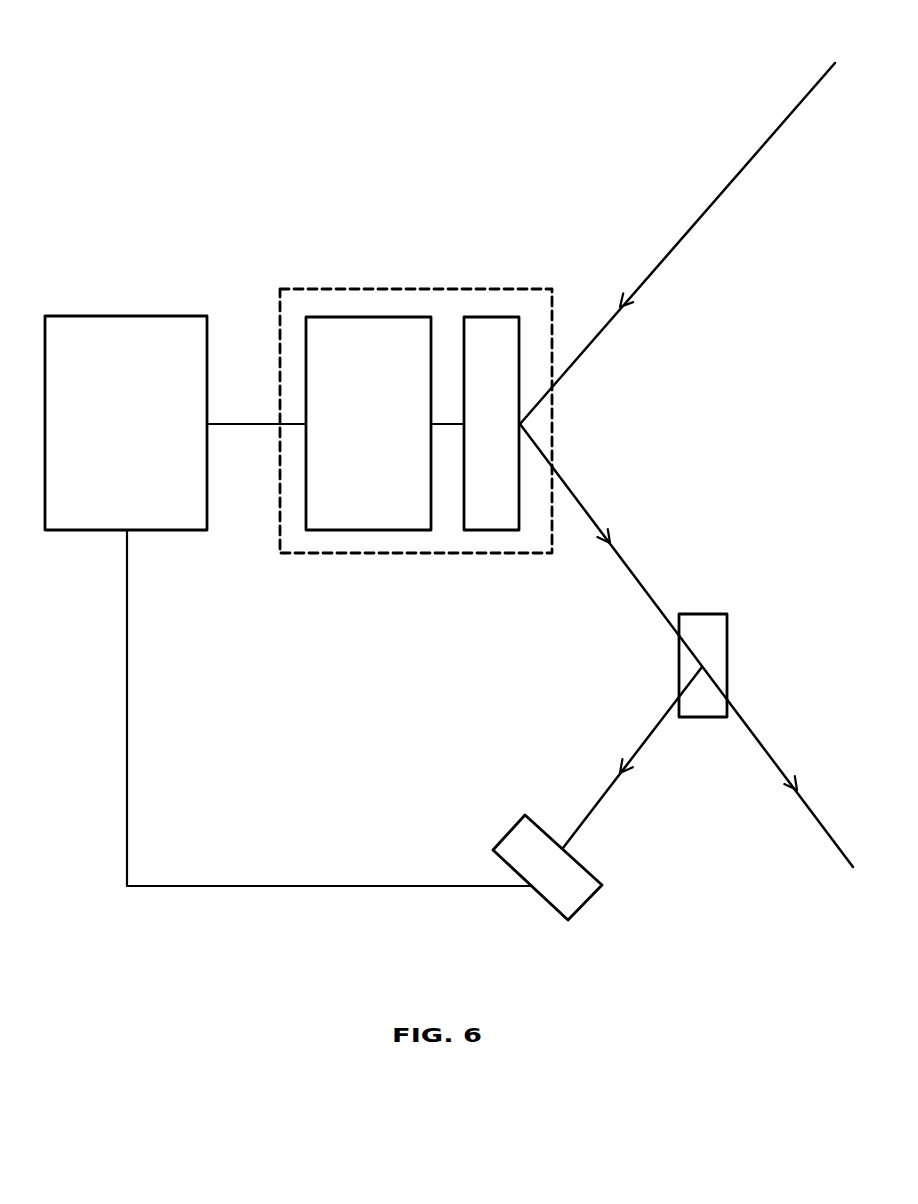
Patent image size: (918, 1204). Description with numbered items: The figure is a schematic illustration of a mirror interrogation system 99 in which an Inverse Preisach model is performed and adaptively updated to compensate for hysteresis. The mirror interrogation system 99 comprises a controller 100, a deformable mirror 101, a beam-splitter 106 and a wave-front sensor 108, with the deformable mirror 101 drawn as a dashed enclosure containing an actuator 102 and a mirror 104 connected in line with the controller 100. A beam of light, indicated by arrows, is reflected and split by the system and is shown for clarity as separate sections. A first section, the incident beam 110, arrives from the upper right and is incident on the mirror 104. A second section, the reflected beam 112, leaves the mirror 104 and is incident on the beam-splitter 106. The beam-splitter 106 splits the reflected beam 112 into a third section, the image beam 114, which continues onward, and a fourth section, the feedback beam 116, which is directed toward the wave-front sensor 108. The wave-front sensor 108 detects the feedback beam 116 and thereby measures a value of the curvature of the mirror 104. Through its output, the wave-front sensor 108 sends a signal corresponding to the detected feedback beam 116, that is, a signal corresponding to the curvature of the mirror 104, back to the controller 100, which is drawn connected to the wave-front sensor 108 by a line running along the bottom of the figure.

The mirror interrogation system 99 is at (547, 73).
The controller 100 is at (139, 438).
The deformable mirror 101 is at (390, 289).
The actuator 102 is at (382, 438).
The mirror 104 is at (512, 438).
The beam-splitter 106 is at (679, 670).
The wave-front sensor 108 is at (507, 832).
The incident beam 110 is at (713, 202).
The reflected beam 112 is at (630, 570).
The image beam 114 is at (753, 733).
The feedback beam 116 is at (602, 795).